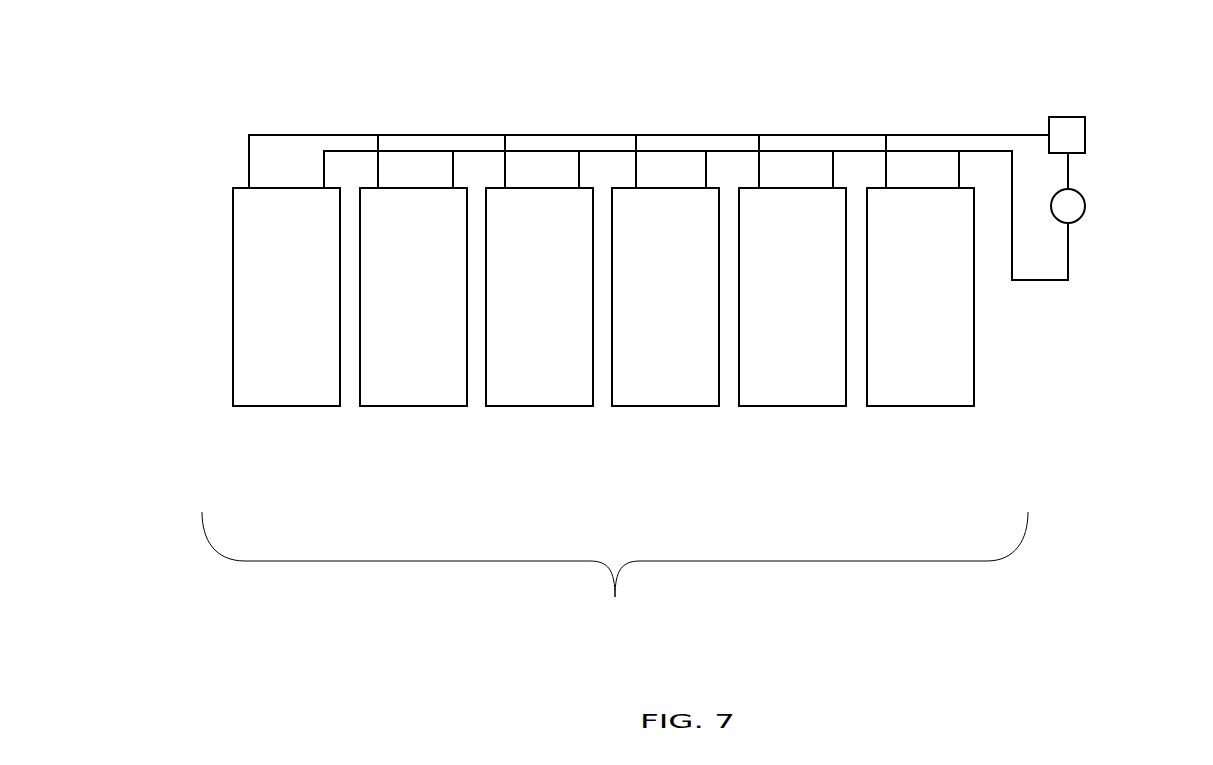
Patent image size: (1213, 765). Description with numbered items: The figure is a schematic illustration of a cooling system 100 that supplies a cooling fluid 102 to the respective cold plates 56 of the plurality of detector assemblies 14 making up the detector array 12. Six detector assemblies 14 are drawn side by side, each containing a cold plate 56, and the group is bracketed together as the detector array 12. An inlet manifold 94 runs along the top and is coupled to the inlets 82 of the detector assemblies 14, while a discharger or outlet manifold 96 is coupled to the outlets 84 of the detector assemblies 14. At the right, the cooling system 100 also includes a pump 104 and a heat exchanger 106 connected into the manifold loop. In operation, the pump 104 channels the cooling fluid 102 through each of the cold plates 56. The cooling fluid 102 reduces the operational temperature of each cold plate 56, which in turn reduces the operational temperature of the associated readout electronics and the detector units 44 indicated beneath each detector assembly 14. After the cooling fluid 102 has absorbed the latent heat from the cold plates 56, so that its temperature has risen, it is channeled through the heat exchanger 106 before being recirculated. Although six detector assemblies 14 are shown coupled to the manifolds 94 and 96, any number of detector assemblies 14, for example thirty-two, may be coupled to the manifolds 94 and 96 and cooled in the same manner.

The cooling system 100 is at (983, 70).
The detector array 12 is at (615, 597).
The detector assemblies 14 is at (260, 408).
The detector units 44 is at (293, 446).
The cold plates 56 is at (273, 308).
The inlets 82 is at (247, 147).
The outlets 84 is at (323, 167).
The inlet manifold 94 is at (450, 134).
The outlet manifold 96 is at (546, 150).
The cooling fluid 102 is at (800, 134).
The pump 104 is at (1087, 205).
The heat exchanger 106 is at (1087, 133).